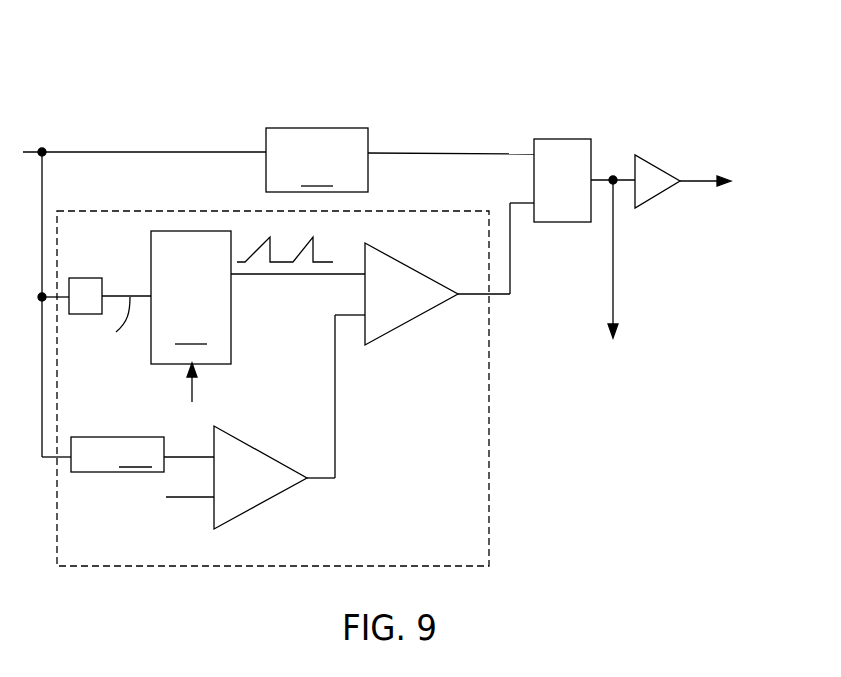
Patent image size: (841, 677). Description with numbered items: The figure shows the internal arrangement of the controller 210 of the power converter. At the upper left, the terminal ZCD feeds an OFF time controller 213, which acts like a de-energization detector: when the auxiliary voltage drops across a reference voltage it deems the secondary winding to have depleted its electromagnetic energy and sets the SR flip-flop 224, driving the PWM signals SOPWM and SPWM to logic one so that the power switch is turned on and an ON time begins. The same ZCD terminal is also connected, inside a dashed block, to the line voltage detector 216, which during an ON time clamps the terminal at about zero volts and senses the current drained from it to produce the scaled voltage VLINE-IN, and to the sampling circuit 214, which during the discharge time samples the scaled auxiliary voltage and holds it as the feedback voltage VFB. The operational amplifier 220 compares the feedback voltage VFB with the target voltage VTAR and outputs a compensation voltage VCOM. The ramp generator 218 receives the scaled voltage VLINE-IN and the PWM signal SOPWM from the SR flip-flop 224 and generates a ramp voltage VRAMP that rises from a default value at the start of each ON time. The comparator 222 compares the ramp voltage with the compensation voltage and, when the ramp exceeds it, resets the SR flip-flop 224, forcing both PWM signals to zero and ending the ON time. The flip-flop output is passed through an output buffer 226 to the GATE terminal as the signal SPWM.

The controller 210 is at (130, 88).
The OFF time controller 213 is at (400, 160).
The sampling circuit 214 is at (142, 451).
The line voltage detector 216 is at (80, 278).
The ramp generator 218 is at (258, 319).
The operational amplifier 220 is at (255, 507).
The comparator 222 is at (408, 263).
The SR flip-flop 224 is at (560, 139).
The gate driver buffer 226 is at (643, 155).